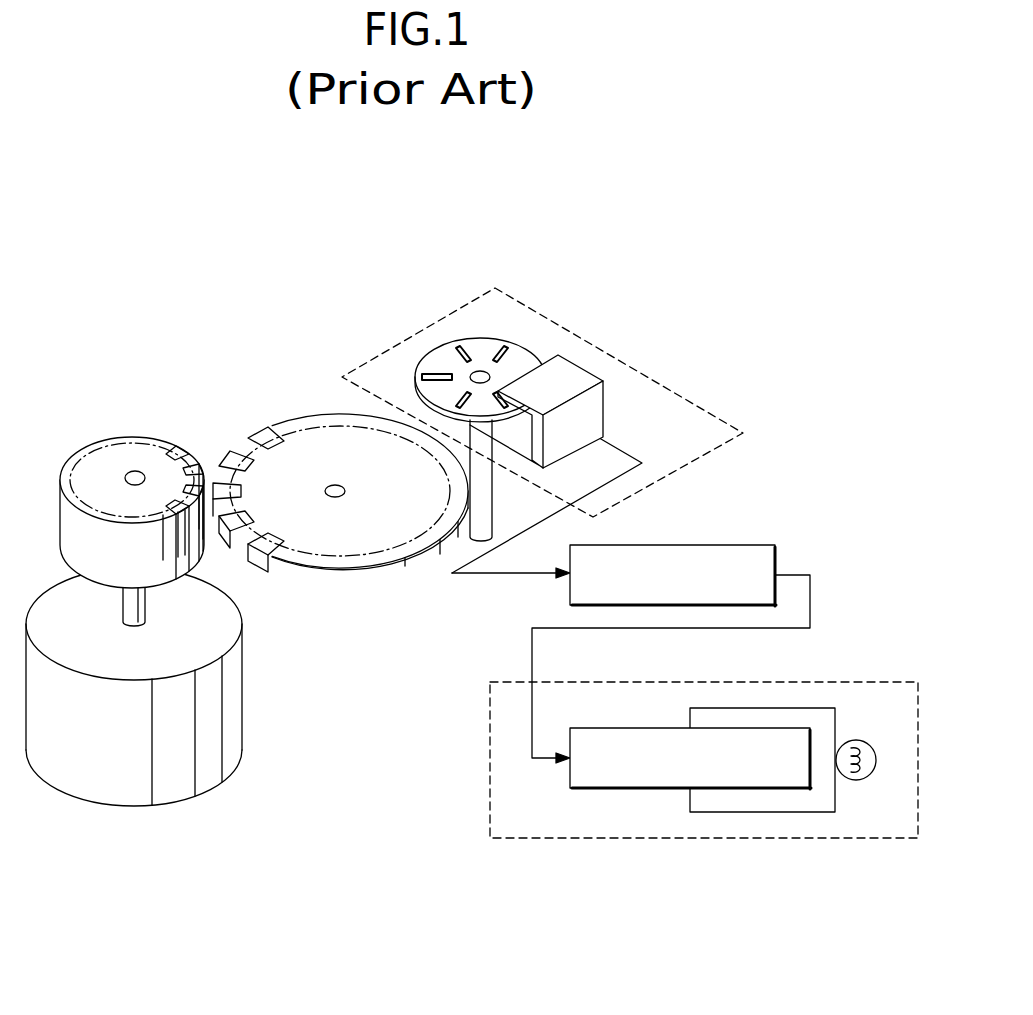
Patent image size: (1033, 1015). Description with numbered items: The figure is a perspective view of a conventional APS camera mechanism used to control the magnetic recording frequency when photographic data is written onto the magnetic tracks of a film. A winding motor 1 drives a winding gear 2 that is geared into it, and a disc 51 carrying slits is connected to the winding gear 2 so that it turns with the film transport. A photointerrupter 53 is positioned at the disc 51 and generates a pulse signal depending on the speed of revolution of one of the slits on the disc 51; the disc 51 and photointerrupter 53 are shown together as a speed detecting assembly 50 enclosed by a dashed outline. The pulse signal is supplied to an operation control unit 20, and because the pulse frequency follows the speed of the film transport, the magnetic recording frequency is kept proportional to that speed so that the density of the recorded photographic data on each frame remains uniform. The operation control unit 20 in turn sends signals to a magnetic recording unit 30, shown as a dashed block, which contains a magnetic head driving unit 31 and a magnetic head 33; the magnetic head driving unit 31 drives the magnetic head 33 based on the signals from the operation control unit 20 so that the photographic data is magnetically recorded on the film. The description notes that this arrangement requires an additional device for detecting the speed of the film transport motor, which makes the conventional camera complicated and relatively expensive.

The winding motor 1 is at (117, 787).
The winding gear 2 is at (345, 573).
The operation control unit 20 is at (757, 543).
The magnetic recording unit 30 is at (704, 787).
The magnetic head driving unit 31 is at (570, 778).
The magnetic head 33 is at (872, 742).
The rotation detecting unit 50 is at (542, 427).
The disc 51 is at (438, 355).
The photointerrupter 53 is at (598, 410).